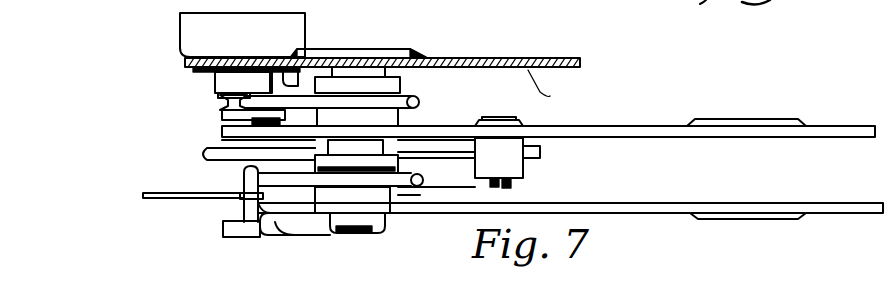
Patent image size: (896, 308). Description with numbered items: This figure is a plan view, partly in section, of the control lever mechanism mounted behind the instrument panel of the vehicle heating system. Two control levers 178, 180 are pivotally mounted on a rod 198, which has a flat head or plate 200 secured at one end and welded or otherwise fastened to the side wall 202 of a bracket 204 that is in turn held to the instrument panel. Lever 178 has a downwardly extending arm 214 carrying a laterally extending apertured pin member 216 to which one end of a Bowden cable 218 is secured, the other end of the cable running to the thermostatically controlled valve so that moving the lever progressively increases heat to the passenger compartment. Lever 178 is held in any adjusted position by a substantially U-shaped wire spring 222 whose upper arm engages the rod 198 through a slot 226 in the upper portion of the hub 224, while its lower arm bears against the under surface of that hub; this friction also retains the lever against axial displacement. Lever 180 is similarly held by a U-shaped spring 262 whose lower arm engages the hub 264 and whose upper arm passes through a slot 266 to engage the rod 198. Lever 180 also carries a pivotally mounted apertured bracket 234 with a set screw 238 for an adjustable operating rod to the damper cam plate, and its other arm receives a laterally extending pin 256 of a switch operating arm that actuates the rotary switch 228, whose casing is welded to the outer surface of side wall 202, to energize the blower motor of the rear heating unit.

The control lever 178 is at (637, 208).
The control lever 180 is at (803, 138).
The rod 198 is at (367, 232).
The flat head or plate 200 is at (369, 55).
The side wall 202 is at (483, 62).
The bracket 204 is at (522, 68).
The downwardly extending arm 214 is at (278, 232).
The apertured pin member 216 is at (247, 203).
The Bowden cable 218 is at (153, 200).
The U-shaped wire spring 222 is at (421, 179).
The hub 224 is at (385, 198).
The slot 226 is at (364, 168).
The switch 228 is at (183, 38).
The apertured bracket 234 is at (520, 168).
The set screw 238 is at (511, 187).
The laterally extending pin 256 is at (258, 117).
The U-shaped spring 262 is at (420, 100).
The hub 264 is at (393, 80).
The slot 266 is at (350, 83).